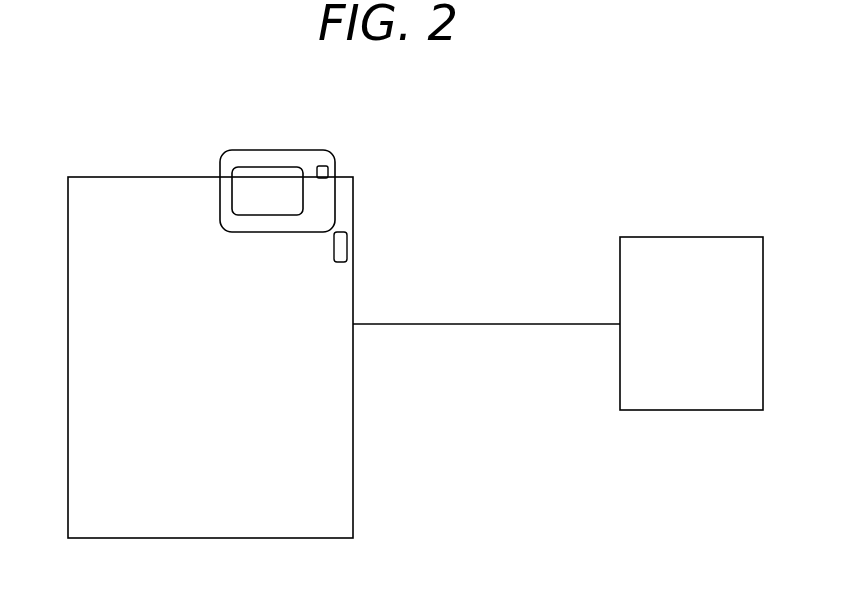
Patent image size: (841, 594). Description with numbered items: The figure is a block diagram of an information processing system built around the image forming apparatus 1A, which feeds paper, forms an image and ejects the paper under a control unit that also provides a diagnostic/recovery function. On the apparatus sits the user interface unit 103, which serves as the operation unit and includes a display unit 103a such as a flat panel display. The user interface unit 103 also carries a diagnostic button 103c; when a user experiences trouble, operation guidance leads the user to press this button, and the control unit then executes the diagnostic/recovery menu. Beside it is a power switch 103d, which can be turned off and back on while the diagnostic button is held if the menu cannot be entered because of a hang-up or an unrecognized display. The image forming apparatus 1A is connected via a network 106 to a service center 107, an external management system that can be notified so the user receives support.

The image forming apparatus 1A is at (80, 130).
The user interface unit 103 is at (287, 150).
The display unit 103a is at (247, 174).
The diagnostic button 103c is at (322, 166).
The power switch 103d is at (343, 247).
The network 106 is at (465, 325).
The service center 107 is at (695, 237).